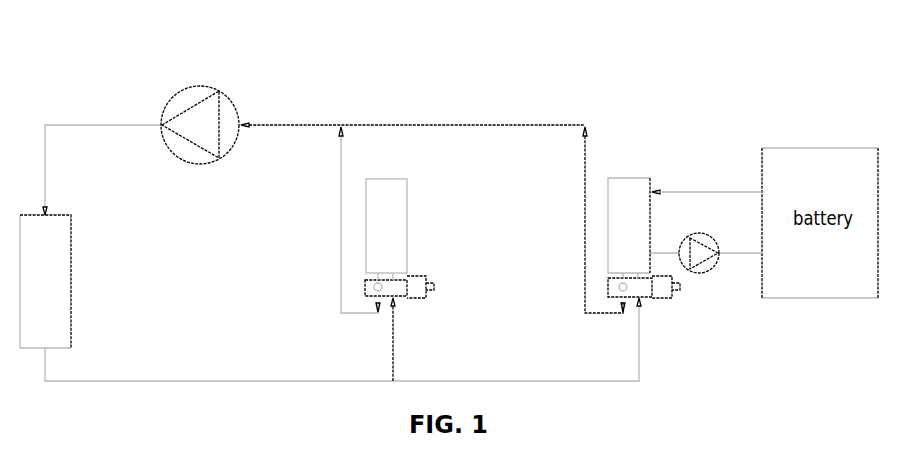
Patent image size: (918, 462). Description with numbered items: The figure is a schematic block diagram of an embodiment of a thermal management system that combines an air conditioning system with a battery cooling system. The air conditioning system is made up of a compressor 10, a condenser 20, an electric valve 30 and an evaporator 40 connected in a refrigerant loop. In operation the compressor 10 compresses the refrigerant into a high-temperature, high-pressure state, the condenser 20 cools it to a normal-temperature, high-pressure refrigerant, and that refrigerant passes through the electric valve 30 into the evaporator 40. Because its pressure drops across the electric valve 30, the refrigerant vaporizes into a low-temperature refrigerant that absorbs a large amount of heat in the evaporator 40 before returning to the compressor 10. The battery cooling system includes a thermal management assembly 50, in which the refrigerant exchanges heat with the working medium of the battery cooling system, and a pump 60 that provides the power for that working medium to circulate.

The compressor 10 is at (222, 90).
The condenser 20 is at (71, 266).
The electric valve 30 is at (397, 288).
The evaporator 40 is at (402, 227).
The thermal management assembly 50 is at (627, 188).
The pump 60 is at (705, 270).